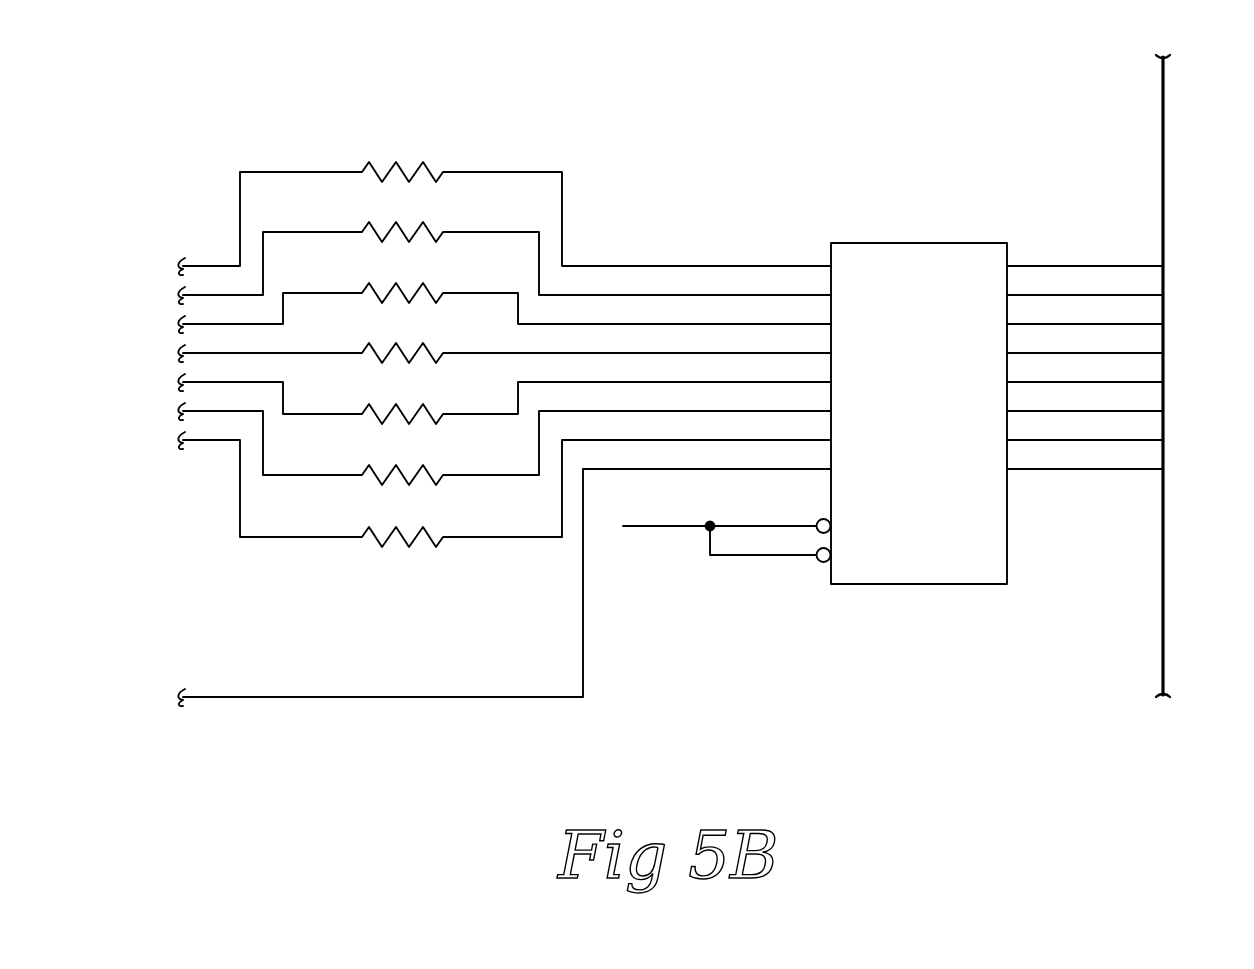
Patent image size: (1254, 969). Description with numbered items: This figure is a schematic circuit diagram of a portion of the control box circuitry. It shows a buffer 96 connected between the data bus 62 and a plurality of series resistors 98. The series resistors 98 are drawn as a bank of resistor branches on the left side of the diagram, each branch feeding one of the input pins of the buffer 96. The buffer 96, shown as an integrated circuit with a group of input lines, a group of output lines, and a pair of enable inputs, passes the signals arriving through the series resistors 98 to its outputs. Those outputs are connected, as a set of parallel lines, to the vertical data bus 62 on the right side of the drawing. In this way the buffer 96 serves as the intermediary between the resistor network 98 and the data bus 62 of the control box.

The series resistors 98 is at (295, 109).
The buffer 96 is at (916, 203).
The data bus 62 is at (1165, 193).